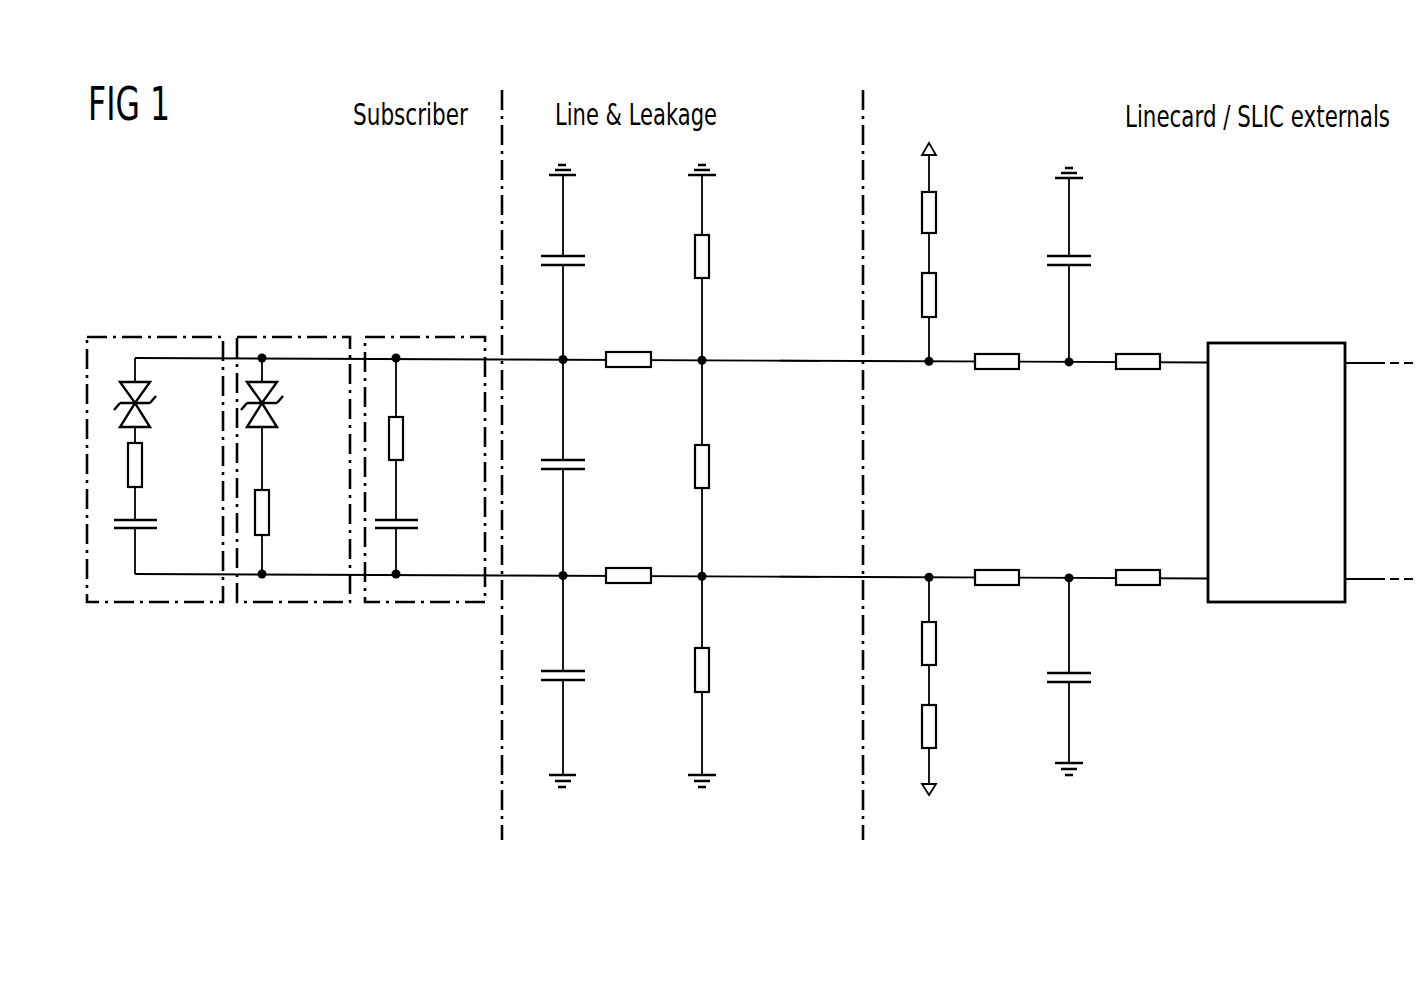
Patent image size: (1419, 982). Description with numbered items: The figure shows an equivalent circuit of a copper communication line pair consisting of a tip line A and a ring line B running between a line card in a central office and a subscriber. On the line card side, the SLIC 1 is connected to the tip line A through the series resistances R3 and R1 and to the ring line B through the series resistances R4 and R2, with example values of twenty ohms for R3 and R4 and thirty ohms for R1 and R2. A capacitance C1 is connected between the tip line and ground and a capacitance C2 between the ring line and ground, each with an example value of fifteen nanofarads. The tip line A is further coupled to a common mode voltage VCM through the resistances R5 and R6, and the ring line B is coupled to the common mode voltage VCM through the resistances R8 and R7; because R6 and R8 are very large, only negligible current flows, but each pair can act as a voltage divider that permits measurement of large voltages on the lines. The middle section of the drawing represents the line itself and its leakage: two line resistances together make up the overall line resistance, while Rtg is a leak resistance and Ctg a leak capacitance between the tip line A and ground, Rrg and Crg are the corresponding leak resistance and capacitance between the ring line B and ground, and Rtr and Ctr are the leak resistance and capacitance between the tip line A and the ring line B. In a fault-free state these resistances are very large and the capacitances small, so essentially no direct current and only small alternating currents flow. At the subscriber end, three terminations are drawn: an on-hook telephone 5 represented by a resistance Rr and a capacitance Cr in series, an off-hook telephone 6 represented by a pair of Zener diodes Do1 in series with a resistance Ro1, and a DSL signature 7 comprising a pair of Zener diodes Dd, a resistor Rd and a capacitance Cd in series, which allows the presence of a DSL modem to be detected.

The SLIC 1 is at (1278, 343).
The on-hook telephone termination 5 is at (437, 337).
The off-hook telephone equivalent circuit 6 is at (309, 337).
The DSL signature 7 is at (157, 337).
The pair of Zener diodes Dd is at (148, 408).
The resistor Rd is at (143, 465).
The capacitance Cd is at (158, 526).
The pair of Zener diodes Do1 is at (273, 408).
The resistance Ro1 is at (270, 510).
The resistance Rr is at (403, 440).
The capacitance Cr is at (418, 526).
The leak capacitance Ctg is at (585, 260).
The leak resistance Rtg is at (709, 257).
The tip line A is at (800, 360).
The ring line B is at (800, 576).
The leak capacitance Ctr is at (585, 465).
The leak resistance Rtr is at (709, 467).
The leak capacitance Crg is at (585, 676).
The leak resistance Rrg is at (709, 670).
The common mode voltage VCM is at (929, 468).
The resistance R5 is at (936, 213).
The resistance R6 is at (936, 297).
The resistance R7 is at (936, 727).
The resistance R8 is at (936, 643).
The resistance R3 is at (997, 369).
The resistance R4 is at (997, 570).
The resistance R1 is at (1138, 369).
The resistance R2 is at (1138, 570).
The capacitance C1 is at (1091, 261).
The capacitance C2 is at (1091, 678).